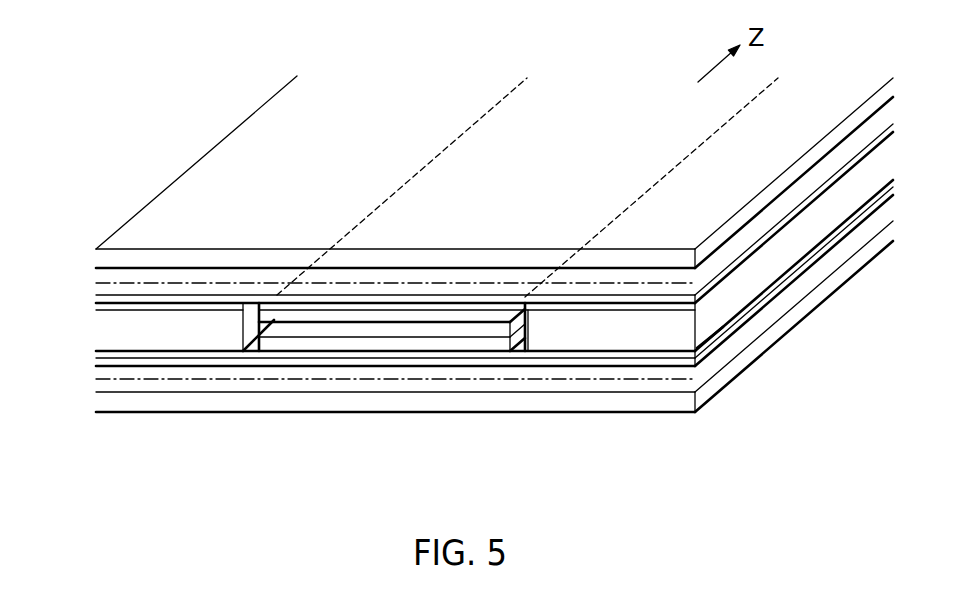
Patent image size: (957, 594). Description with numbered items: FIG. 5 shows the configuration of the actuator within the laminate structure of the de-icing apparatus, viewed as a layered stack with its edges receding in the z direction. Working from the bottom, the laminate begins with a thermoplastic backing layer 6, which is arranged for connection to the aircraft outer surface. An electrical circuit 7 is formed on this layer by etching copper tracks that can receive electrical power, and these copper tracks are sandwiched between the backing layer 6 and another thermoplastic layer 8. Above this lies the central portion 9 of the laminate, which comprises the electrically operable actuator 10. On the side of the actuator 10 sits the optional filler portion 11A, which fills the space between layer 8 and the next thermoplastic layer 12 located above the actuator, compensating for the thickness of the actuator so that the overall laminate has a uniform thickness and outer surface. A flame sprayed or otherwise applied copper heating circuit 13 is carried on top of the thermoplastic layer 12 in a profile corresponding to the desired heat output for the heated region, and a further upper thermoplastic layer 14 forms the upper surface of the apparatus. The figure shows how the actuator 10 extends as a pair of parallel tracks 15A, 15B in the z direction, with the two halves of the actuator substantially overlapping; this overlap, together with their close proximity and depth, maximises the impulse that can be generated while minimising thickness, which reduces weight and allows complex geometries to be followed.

The upper thermoplastic layer 14 is at (105, 250).
The copper heating circuit 13 is at (95, 282).
The thermoplastic layer 12 is at (95, 298).
The filler portion 11A is at (826, 218).
The central portion 9 is at (95, 302).
The parallel track 15A is at (262, 318).
The electrically operable actuator 10 is at (368, 343).
The parallel track 15B is at (500, 343).
The thermoplastic layer 8 is at (708, 340).
The electrical circuit 7 is at (623, 380).
The thermoplastic backing layer 6 is at (720, 377).